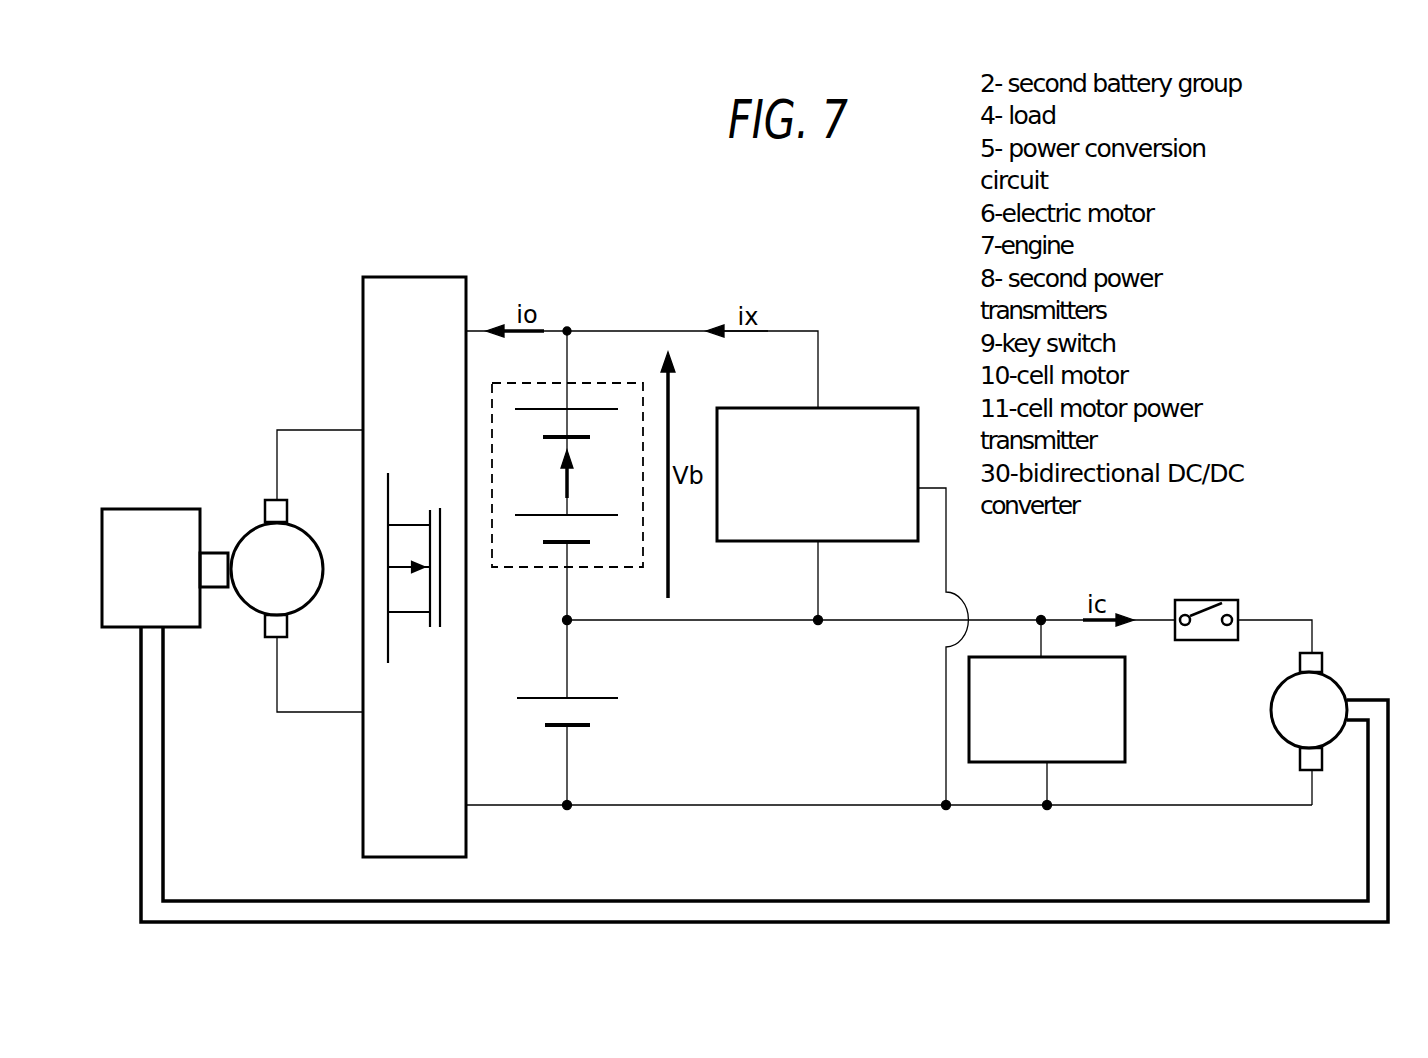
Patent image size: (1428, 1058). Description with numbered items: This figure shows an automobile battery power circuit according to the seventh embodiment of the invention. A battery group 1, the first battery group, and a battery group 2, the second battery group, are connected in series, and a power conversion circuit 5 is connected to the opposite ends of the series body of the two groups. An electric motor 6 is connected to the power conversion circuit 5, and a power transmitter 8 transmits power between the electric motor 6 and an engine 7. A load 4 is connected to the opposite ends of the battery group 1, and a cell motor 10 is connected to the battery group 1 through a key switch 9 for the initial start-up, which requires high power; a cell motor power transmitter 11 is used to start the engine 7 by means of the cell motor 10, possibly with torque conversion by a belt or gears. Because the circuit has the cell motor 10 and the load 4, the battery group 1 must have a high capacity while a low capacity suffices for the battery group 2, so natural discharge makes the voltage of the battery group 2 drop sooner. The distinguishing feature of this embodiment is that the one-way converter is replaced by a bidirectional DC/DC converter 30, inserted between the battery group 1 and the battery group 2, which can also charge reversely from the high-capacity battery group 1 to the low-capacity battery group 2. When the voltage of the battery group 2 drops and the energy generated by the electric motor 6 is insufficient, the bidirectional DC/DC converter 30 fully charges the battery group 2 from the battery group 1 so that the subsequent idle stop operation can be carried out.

The battery group 1 is at (605, 698).
The battery group 2 is at (613, 383).
The load 4 is at (1115, 710).
The power conversion circuit 5 is at (410, 290).
The electric motor 6 is at (254, 542).
The engine 7 is at (150, 518).
The power transmitter 8 is at (215, 580).
The key switch 9 is at (1228, 600).
The cell motor 10 is at (1333, 690).
The cell motor power transmitter 11 is at (745, 908).
The bidirectional DC/DC converter 30 is at (870, 418).